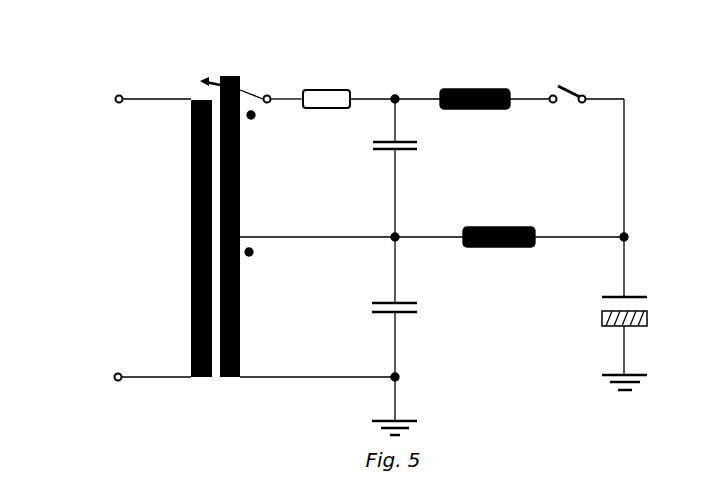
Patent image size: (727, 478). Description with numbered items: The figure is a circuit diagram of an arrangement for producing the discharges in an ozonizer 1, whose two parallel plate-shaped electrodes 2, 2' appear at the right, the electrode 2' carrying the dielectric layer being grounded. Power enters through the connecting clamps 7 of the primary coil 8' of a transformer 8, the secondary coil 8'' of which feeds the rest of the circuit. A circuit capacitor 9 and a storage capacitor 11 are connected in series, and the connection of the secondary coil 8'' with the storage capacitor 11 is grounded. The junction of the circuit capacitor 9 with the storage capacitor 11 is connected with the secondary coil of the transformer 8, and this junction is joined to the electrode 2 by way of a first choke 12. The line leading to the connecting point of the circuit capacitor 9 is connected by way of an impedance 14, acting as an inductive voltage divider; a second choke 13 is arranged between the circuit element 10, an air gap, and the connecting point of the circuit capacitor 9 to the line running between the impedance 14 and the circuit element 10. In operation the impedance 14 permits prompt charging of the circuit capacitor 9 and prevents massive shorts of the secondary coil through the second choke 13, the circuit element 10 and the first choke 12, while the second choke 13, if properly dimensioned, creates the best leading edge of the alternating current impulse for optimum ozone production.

The ozonizer 1 is at (600, 312).
The electrode 2 is at (602, 276).
The electrode 2' is at (601, 340).
The connecting clamps 7 is at (116, 103).
The transformer 8 is at (207, 228).
The primary coil 8' is at (175, 197).
The secondary coil 8'' is at (238, 197).
The circuit capacitor 9 is at (378, 150).
The circuit element 10 is at (570, 84).
The storage capacitor 11 is at (378, 299).
The first choke 12 is at (494, 227).
The second choke 13 is at (464, 88).
The impedance 14 is at (325, 90).